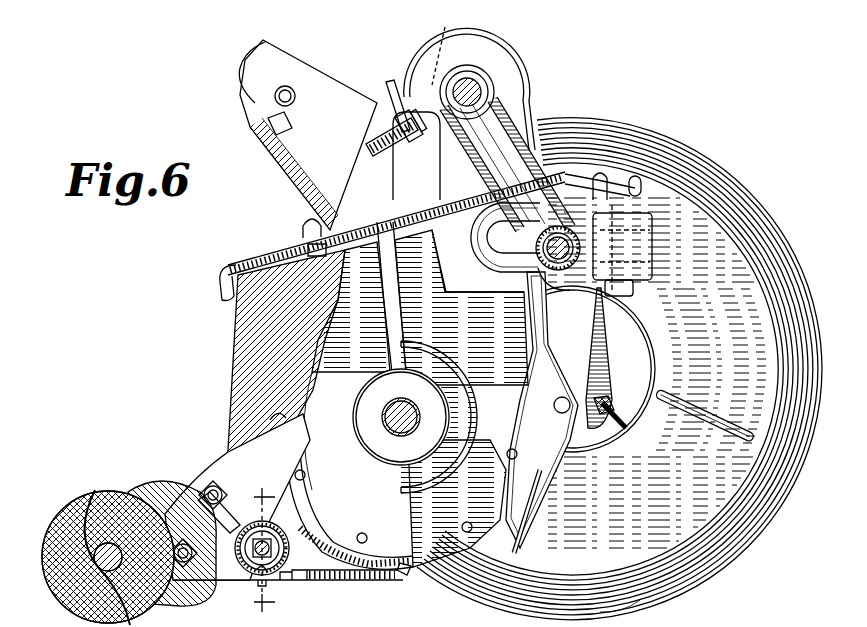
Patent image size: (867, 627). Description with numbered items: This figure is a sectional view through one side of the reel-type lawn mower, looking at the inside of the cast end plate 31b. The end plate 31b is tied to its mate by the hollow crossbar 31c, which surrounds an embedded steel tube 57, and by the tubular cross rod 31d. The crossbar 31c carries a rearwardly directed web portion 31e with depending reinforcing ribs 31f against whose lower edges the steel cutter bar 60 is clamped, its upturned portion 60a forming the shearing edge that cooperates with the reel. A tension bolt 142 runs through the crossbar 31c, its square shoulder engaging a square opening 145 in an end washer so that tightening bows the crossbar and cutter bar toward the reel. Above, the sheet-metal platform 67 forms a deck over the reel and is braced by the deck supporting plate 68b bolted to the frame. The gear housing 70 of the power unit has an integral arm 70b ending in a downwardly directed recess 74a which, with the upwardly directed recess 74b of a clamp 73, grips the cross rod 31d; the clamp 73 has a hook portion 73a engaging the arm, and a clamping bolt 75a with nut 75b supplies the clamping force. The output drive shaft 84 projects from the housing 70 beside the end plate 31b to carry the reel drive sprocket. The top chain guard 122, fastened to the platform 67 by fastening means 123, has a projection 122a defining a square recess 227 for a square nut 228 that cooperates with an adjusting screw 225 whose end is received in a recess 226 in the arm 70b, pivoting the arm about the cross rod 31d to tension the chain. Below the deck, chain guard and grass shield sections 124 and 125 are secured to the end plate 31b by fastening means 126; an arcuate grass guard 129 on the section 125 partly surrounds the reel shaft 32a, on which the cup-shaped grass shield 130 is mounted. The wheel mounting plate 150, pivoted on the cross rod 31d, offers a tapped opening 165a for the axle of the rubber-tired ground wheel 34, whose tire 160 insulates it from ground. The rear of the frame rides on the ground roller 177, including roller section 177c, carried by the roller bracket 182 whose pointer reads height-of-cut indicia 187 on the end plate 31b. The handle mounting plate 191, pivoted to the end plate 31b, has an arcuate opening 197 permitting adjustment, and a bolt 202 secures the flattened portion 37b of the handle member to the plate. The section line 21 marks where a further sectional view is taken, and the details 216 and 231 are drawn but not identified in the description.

The ground wheel 34 is at (783, 226).
The wheel rim groove 216 is at (700, 515).
The rubber tire 160 is at (717, 562).
The wheel hub portion 231 is at (628, 613).
The end plate 31b is at (563, 470).
The wheel mounting plate 150 is at (603, 356).
The tapped opening 165a is at (606, 393).
The front chain guard section 125 is at (494, 352).
The top chain guard 122 is at (531, 76).
The recess 226 is at (454, 46).
The gear housing 70 is at (512, 58).
The motor mounting bracket 70b is at (514, 140).
The output drive shaft 84 is at (478, 62).
The adjusting screw 225 is at (420, 110).
The projection 122a is at (400, 122).
The square nut 228 is at (398, 95).
The square recess 227 is at (428, 150).
The handle mounting plate 191 is at (338, 52).
The flattened portion of handle member 37b is at (248, 72).
The bolt 202 is at (275, 99).
The elongated arcuate opening 197 is at (270, 130).
The platform 67 is at (262, 262).
The fastening means 123 is at (312, 215).
The deck supporting plate 68b is at (243, 353).
The chain guard and grass shield 124 is at (300, 425).
The hook portion 73a is at (478, 240).
The cross rod 31d is at (525, 268).
The downwardly directed recess 74a is at (573, 233).
The clamp 73 is at (572, 275).
The upwardly directed recess 74b is at (556, 282).
The clamping bolt 75a is at (644, 220).
The nut 75b is at (637, 277).
The web portion 31e is at (330, 555).
The arcuate grass guard 129 is at (450, 365).
The grass shield 130 is at (378, 434).
The reel shaft 32a is at (399, 402).
The fastening means 126 is at (363, 533).
The cutter bar 60 is at (380, 580).
The upturned portion 60a is at (408, 573).
The reinforcing ribs 31f is at (295, 587).
The indicia 187 is at (187, 475).
The crossbar 31c is at (257, 524).
The tension bolt 142 is at (278, 537).
The steel tube 57 is at (257, 572).
The square opening 145 is at (256, 588).
The section line 21 is at (257, 543).
The roller bracket 182 is at (143, 492).
The ground roller 177 is at (62, 503).
The roller section 177c is at (83, 488).